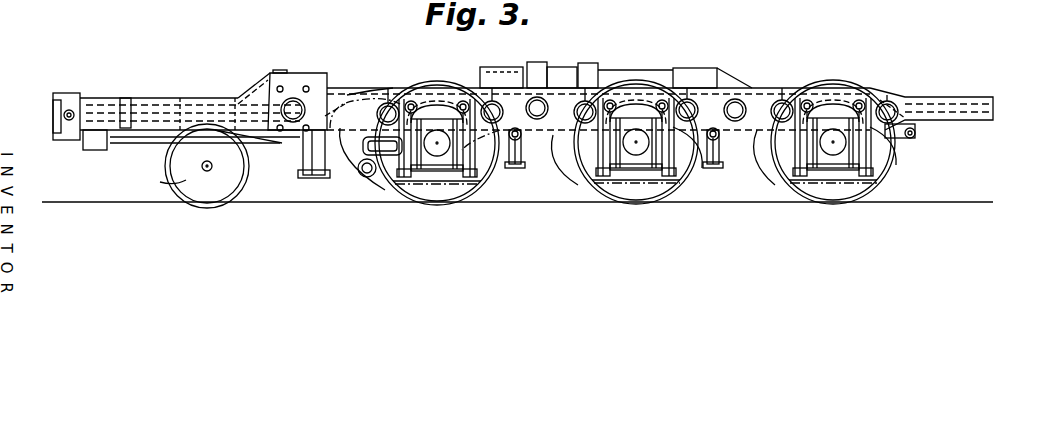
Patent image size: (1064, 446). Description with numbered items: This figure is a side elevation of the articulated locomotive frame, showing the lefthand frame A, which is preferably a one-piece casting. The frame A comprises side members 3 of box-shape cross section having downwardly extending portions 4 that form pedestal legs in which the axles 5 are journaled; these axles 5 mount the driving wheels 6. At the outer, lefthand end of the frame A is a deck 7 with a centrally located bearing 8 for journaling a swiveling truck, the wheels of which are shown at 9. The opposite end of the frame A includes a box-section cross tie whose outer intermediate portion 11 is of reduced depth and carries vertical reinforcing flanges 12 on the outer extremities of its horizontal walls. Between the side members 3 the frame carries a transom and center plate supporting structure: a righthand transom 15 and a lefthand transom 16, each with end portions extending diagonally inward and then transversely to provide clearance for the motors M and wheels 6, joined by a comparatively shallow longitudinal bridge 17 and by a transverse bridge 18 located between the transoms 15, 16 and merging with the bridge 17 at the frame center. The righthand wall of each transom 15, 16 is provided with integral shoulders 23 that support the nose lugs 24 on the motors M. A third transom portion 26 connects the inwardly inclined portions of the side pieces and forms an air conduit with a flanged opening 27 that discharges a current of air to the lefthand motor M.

The side members 3 is at (761, 89).
The downwardly extending portions 4 is at (443, 163).
The axles 5 is at (634, 154).
The driving wheels 6 is at (482, 184).
The deck 7 is at (125, 101).
The bearing 8 is at (176, 163).
The wheels 9 is at (184, 187).
The outer intermediate portion 11 is at (994, 108).
The vertical reinforcing flanges 12 is at (984, 98).
The righthand transom 15 is at (729, 76).
The lefthand transom 16 is at (508, 78).
The longitudinal bridge 17 is at (640, 70).
The transverse bridge 18 is at (578, 66).
The shoulders 23 is at (530, 165).
The nose lugs 24 is at (522, 136).
The third transom portion 26 is at (327, 102).
The flanged opening 27 is at (306, 72).
The lefthand frame A is at (355, 92).
The motors M is at (386, 186).